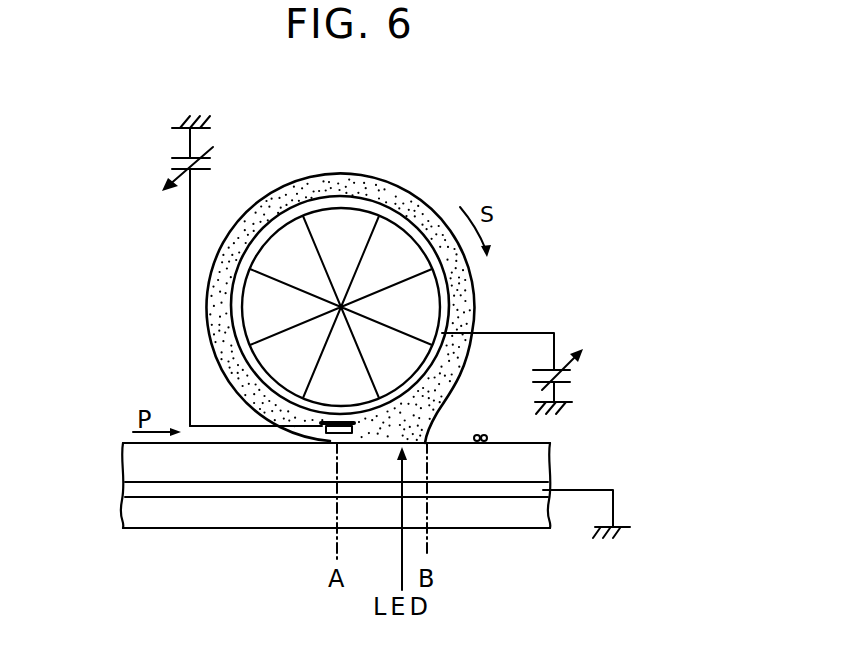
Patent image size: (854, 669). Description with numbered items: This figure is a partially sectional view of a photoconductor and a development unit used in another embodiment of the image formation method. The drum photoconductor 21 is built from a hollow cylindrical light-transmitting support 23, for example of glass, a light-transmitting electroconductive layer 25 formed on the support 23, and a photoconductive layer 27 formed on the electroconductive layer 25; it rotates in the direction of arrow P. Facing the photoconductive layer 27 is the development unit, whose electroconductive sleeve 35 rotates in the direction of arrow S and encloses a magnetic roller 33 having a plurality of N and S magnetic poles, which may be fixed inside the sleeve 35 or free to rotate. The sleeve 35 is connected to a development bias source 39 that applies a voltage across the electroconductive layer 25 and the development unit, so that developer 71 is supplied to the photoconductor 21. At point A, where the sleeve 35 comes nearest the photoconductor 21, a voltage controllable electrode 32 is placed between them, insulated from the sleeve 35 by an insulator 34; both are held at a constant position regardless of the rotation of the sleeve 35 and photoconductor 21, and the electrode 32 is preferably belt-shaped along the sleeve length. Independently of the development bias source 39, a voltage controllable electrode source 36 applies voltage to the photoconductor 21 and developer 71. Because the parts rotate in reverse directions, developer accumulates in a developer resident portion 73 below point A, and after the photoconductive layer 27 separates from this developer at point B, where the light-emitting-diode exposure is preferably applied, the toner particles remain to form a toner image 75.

The photoconductor 21 is at (292, 458).
The light-transmitting support 23 is at (128, 507).
The light-transmitting electroconductive layer 25 is at (128, 488).
The photoconductive layer 27 is at (133, 462).
The voltage controllable electrode 32 is at (337, 438).
The magnetic roller 33 is at (388, 228).
The insulator 34 is at (297, 428).
The electroconductive sleeve 35 is at (443, 286).
The voltage controllable electrode source 36 is at (177, 163).
The development bias source 39 is at (567, 380).
The developer 71 is at (462, 315).
The developer resident portion 73 is at (460, 426).
The toner image 75 is at (492, 438).